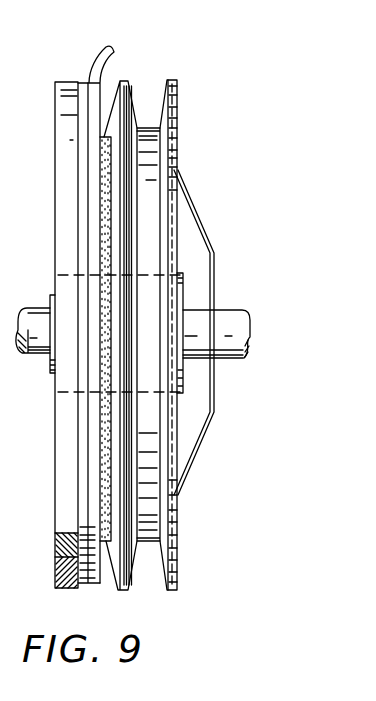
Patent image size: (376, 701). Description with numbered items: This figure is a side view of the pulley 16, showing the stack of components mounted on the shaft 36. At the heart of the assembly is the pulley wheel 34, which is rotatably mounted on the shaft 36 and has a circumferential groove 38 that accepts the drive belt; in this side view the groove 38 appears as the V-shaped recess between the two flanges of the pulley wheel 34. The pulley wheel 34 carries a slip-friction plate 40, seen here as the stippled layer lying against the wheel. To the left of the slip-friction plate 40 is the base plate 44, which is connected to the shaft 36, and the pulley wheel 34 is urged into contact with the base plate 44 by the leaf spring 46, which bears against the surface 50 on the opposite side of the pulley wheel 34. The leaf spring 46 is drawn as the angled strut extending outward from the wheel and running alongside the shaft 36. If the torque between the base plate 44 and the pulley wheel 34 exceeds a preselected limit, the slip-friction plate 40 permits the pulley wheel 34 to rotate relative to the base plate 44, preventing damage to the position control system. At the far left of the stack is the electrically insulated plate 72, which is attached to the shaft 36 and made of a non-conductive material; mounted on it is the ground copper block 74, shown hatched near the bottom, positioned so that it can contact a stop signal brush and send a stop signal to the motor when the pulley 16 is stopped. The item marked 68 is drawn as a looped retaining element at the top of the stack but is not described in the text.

The pulley 16 is at (186, 93).
The pulley wheel 34 is at (175, 82).
The shaft 36 is at (227, 360).
The circumferential groove 38 is at (132, 102).
The slip-friction plate 40 is at (104, 135).
The base plate 44 is at (79, 88).
The leaf spring 46 is at (212, 256).
The surface 50 is at (176, 126).
The retaining ring 68 is at (114, 49).
The electrically insulated plate 72 is at (55, 498).
The ground copper block 74 is at (54, 578).